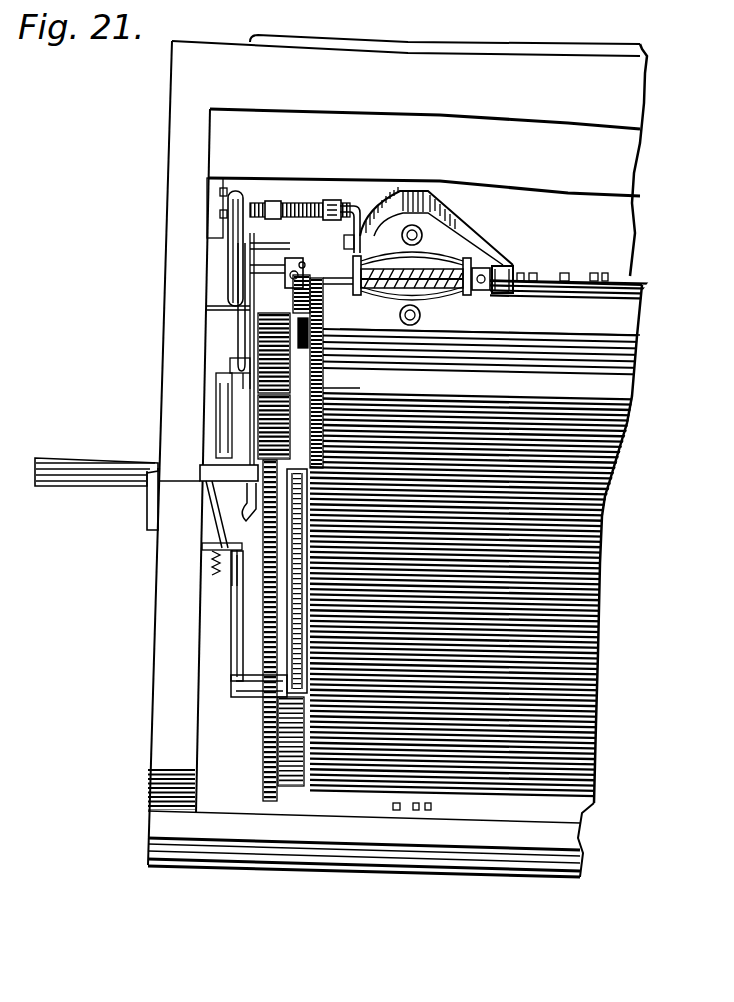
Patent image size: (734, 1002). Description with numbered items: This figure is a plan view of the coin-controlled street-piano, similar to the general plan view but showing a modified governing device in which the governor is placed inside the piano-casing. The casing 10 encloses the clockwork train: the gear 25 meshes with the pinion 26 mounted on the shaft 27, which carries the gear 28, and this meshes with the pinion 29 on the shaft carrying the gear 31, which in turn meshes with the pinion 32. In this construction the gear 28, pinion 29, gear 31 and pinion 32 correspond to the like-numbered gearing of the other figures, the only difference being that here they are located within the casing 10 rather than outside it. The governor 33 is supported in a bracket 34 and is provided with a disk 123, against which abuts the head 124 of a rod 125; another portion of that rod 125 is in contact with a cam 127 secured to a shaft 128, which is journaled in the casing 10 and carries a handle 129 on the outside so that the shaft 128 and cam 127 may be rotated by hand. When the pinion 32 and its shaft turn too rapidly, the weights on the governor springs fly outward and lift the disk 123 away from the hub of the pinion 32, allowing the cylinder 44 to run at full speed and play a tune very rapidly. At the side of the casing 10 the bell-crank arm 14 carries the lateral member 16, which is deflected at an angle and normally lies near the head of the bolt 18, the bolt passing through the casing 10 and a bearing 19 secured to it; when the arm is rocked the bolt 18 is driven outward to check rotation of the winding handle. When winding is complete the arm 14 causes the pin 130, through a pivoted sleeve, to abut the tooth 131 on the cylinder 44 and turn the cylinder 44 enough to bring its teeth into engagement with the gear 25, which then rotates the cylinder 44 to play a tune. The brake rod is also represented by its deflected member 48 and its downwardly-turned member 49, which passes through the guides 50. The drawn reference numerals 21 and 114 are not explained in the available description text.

The casing 10 is at (406, 462).
The arm 14 is at (206, 494).
The lateral member 16 is at (208, 525).
The bolt 18 is at (35, 470).
The bearing 19 is at (82, 484).
The spring 21 is at (222, 570).
The gear 25 is at (283, 598).
The pinion 26 is at (285, 353).
The shaft 27 is at (318, 378).
The gear 28 is at (356, 381).
The pinion 29 is at (320, 326).
The gear 31 is at (481, 302).
The pinion 32 is at (192, 226).
The governor 33 is at (422, 275).
The bracket 34 is at (486, 240).
The cylinder 44 is at (486, 540).
The deflected member 48 is at (236, 246).
The downwardly-turned member 49 is at (236, 350).
The guides 50 is at (246, 372).
The stops 114 is at (597, 270).
The disk 123 is at (312, 298).
The head 124 is at (340, 235).
The rod 125 is at (330, 204).
The cam 127 is at (272, 200).
The shaft 128 is at (252, 186).
The handle 129 is at (250, 510).
The pin 130 is at (258, 590).
The tooth 131 is at (297, 478).